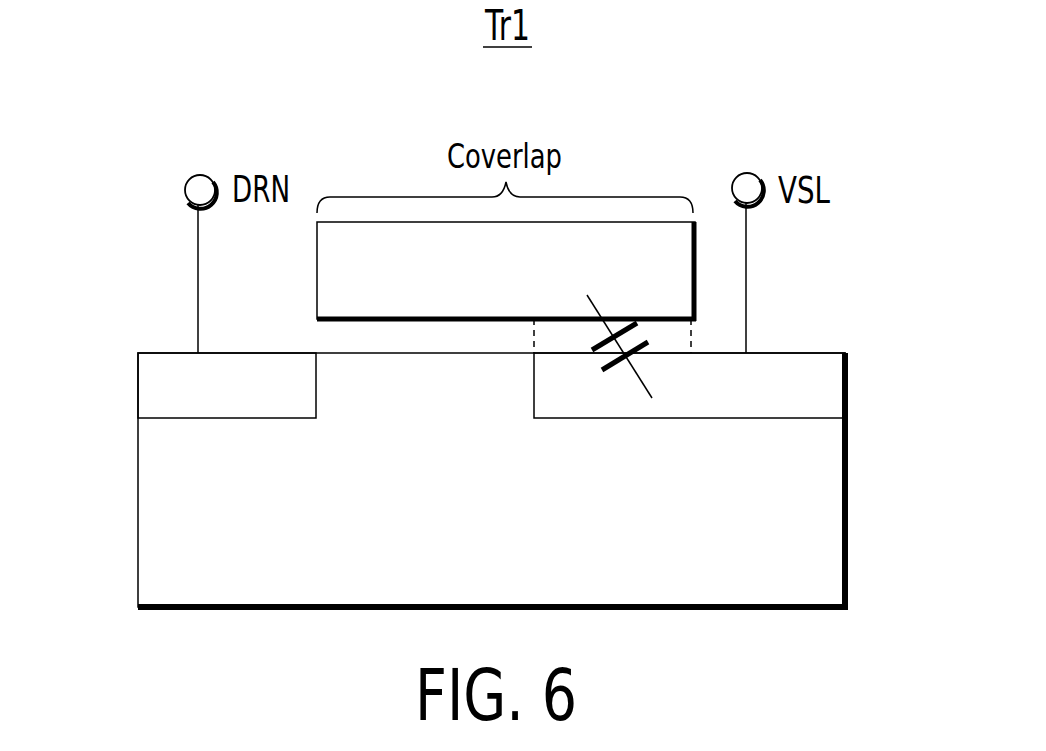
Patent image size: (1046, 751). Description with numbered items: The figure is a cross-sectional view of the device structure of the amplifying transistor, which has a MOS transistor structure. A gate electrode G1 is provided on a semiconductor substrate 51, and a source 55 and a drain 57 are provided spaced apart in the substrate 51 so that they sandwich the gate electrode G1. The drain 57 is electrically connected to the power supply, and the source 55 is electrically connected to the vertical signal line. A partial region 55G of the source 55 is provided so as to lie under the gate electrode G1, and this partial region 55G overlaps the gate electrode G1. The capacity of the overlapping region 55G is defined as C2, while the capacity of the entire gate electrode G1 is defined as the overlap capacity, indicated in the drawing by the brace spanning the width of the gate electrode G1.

The semiconductor substrate 51 is at (828, 572).
The drain 57 is at (153, 387).
The source 55 is at (832, 390).
The gate electrode G1 is at (388, 297).
The partial region of the source 55G is at (627, 405).
The capacity of the overlapping region C2 is at (600, 360).